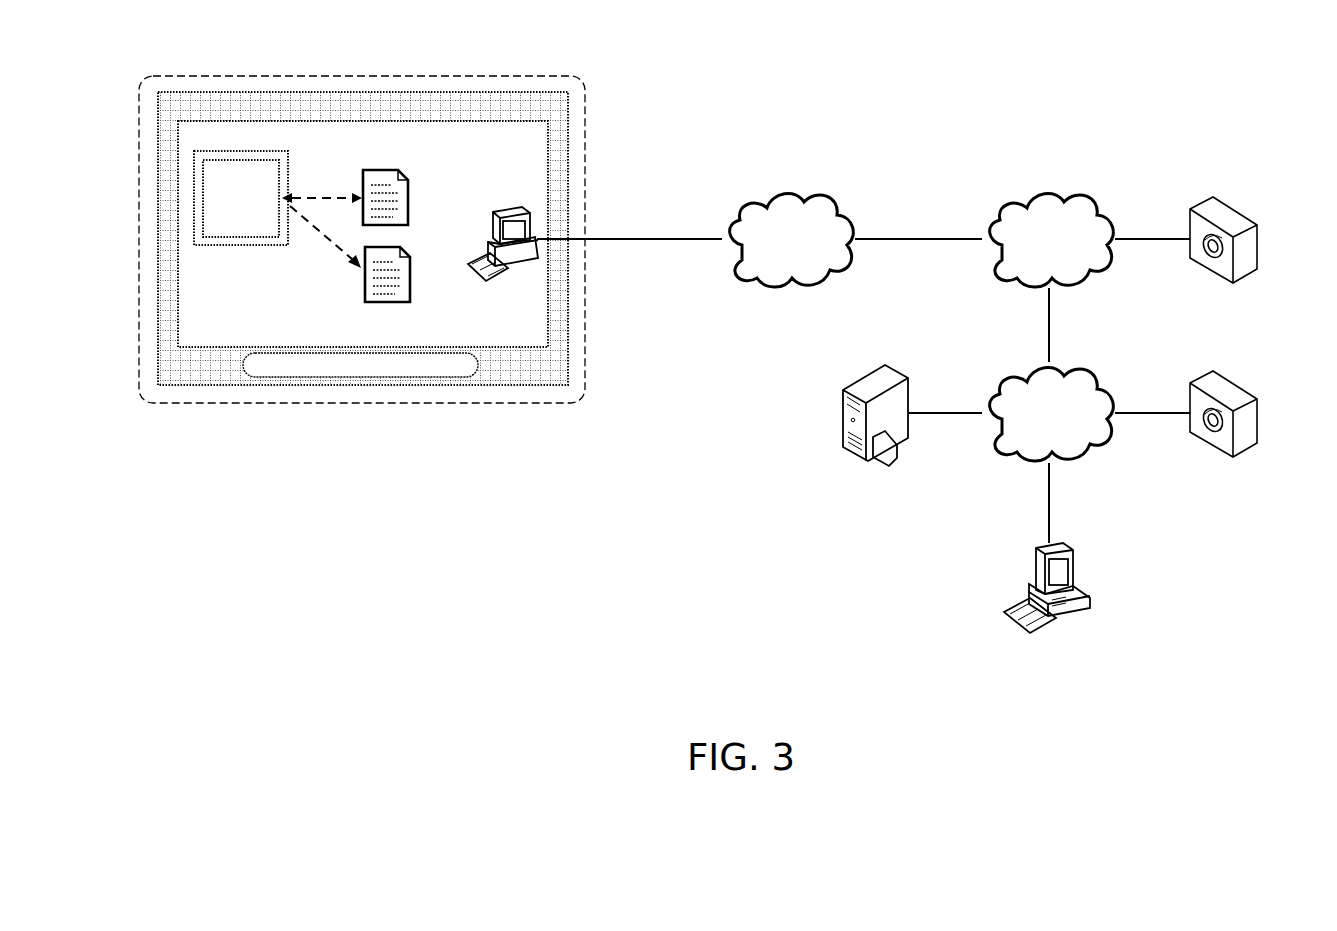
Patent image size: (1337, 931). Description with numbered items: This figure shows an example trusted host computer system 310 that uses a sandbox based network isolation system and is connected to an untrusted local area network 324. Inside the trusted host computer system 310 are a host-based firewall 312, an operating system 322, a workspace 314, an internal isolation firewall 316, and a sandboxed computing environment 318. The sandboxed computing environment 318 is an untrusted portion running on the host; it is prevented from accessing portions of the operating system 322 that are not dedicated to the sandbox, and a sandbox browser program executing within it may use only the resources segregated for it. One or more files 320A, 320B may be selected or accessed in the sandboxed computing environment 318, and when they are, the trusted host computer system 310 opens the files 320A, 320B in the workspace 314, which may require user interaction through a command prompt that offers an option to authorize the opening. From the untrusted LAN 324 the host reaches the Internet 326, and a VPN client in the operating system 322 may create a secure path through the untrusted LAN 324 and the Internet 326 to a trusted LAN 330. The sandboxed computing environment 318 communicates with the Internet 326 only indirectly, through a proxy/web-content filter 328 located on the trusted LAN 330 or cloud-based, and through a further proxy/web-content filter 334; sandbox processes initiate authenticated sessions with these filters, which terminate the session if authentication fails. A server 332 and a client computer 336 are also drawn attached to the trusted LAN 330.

The trusted host computer system 310 is at (222, 76).
The host-based firewall 312 is at (410, 92).
The workspace 314 is at (520, 140).
The internal isolation firewall 316 is at (194, 160).
The sandboxed computing environment 318 is at (203, 219).
The file 320A is at (397, 170).
The file 320B is at (388, 300).
The operating system 322 is at (530, 225).
The untrusted local area network (LAN) 324 is at (833, 210).
The Internet 326 is at (1088, 210).
The proxy/web-content filter 328 is at (1228, 215).
The trusted LAN 330 is at (1088, 380).
The server 332 is at (890, 380).
The proxy/web-content filter 334 is at (1228, 390).
The client computer 336 is at (1068, 553).